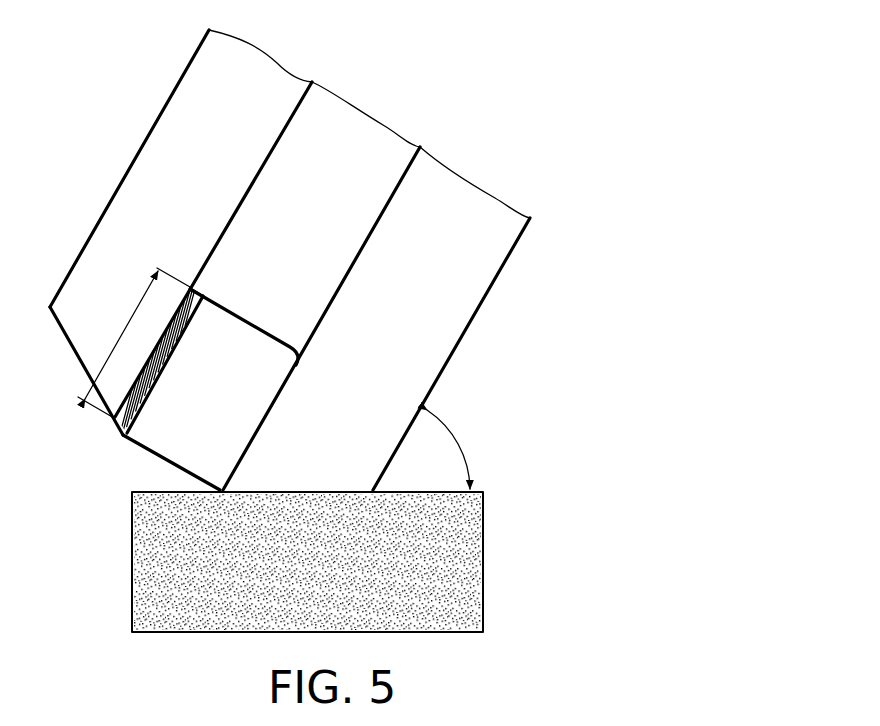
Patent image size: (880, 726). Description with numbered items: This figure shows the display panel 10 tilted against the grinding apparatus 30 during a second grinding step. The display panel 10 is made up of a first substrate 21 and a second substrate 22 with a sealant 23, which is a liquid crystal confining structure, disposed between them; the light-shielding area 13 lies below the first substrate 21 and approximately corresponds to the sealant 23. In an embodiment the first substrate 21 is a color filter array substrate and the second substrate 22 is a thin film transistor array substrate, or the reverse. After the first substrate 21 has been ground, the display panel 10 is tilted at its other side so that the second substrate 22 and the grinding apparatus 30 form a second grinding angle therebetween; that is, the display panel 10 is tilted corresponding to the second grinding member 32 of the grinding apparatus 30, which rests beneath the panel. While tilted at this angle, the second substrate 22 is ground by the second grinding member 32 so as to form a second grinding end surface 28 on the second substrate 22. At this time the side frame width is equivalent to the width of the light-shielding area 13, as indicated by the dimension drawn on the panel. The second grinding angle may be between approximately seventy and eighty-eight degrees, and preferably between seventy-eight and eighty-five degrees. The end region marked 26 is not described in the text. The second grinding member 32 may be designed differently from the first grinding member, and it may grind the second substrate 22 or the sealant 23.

The display panel 10 is at (507, 100).
The light-shielding area 13 is at (160, 330).
The first substrate 21 is at (162, 137).
The second substrate 22 is at (493, 260).
The sealant 23 is at (247, 347).
The end face 26 is at (87, 371).
The second grinding end surface 28 is at (290, 490).
The grinding apparatus 30 is at (506, 634).
The second grinding member 32 is at (473, 568).